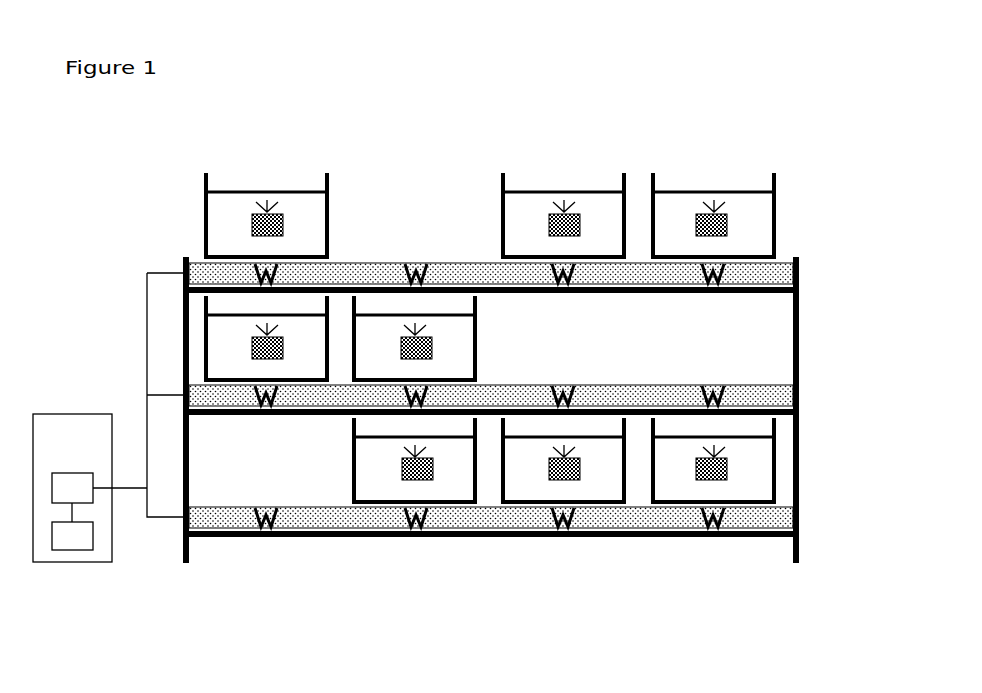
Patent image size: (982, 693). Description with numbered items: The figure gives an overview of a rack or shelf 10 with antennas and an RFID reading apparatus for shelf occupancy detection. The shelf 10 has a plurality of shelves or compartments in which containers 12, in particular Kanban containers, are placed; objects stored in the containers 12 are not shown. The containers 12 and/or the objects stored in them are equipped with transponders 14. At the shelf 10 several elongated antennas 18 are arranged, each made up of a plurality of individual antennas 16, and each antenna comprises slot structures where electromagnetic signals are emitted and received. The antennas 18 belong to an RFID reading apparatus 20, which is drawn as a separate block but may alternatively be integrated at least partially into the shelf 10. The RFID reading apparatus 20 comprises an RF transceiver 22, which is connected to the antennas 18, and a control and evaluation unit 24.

The shelf 10 is at (760, 538).
The container 12 is at (303, 217).
The transponder 14 is at (435, 343).
The individual antenna 16 is at (410, 262).
The antenna 18 is at (782, 272).
The RFID reading apparatus 20 is at (75, 420).
The RF transceiver 22 is at (85, 490).
The control and evaluation unit 24 is at (67, 545).